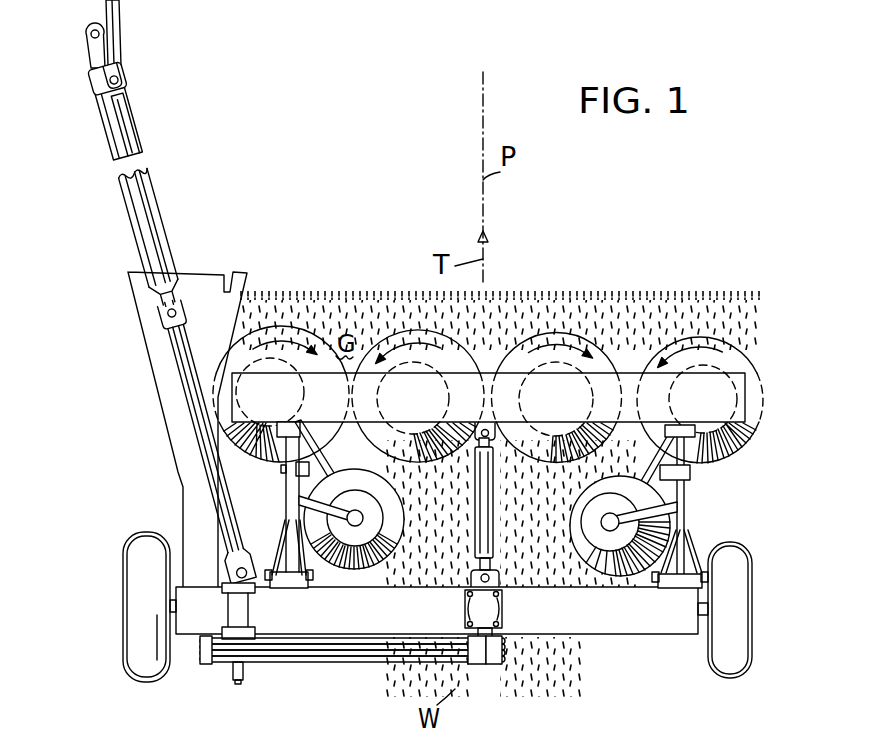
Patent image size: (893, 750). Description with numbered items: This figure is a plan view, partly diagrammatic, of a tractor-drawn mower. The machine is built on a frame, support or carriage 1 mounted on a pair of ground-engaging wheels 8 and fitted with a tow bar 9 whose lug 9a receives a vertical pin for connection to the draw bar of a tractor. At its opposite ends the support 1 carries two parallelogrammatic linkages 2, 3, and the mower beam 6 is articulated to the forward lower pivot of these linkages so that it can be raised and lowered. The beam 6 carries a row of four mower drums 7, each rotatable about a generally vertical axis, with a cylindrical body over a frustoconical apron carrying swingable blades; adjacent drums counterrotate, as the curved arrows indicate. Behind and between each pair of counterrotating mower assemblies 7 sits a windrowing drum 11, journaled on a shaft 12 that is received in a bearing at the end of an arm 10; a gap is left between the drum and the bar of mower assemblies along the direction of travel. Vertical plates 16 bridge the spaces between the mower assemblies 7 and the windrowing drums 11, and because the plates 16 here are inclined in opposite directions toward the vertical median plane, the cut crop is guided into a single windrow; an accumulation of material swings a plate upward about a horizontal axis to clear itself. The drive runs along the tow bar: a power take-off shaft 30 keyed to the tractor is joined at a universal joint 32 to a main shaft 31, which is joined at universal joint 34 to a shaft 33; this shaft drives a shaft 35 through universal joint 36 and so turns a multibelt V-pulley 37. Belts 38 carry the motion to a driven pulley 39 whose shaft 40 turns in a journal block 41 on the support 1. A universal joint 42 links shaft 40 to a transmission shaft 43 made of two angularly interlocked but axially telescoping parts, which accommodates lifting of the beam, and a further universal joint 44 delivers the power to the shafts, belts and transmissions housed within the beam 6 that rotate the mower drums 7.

The frame, support or carriage 1 is at (598, 637).
The parallelogrammatic linkage 2 is at (690, 497).
The parallelogrammatic linkage 3 is at (278, 497).
The mower beam 6 is at (745, 400).
The mower drums 7 is at (262, 338).
The ground-engaging wheels 8 is at (132, 628).
The tow bar 9 is at (159, 216).
The lug 9a is at (90, 48).
The arm 10 is at (320, 505).
The windrowing drums 11 is at (386, 530).
The shaft 12 is at (366, 514).
The vertical plates 16 is at (328, 478).
The power take-off shaft 30 is at (115, 38).
The main shaft 31 is at (127, 150).
The universal joint 32 is at (97, 88).
The shaft 33 is at (175, 350).
The universal joint 34 is at (164, 313).
The shaft 35 is at (236, 680).
The universal joint 36 is at (232, 568).
The multibelt V-pulley 37 is at (205, 662).
The belts 38 is at (295, 663).
The driven pulley 39 is at (475, 665).
The shaft 40 is at (498, 665).
The journal block 41 is at (498, 611).
The universal joint 42 is at (474, 576).
The transmission shaft 43 is at (490, 512).
The universal joint 44 is at (477, 436).